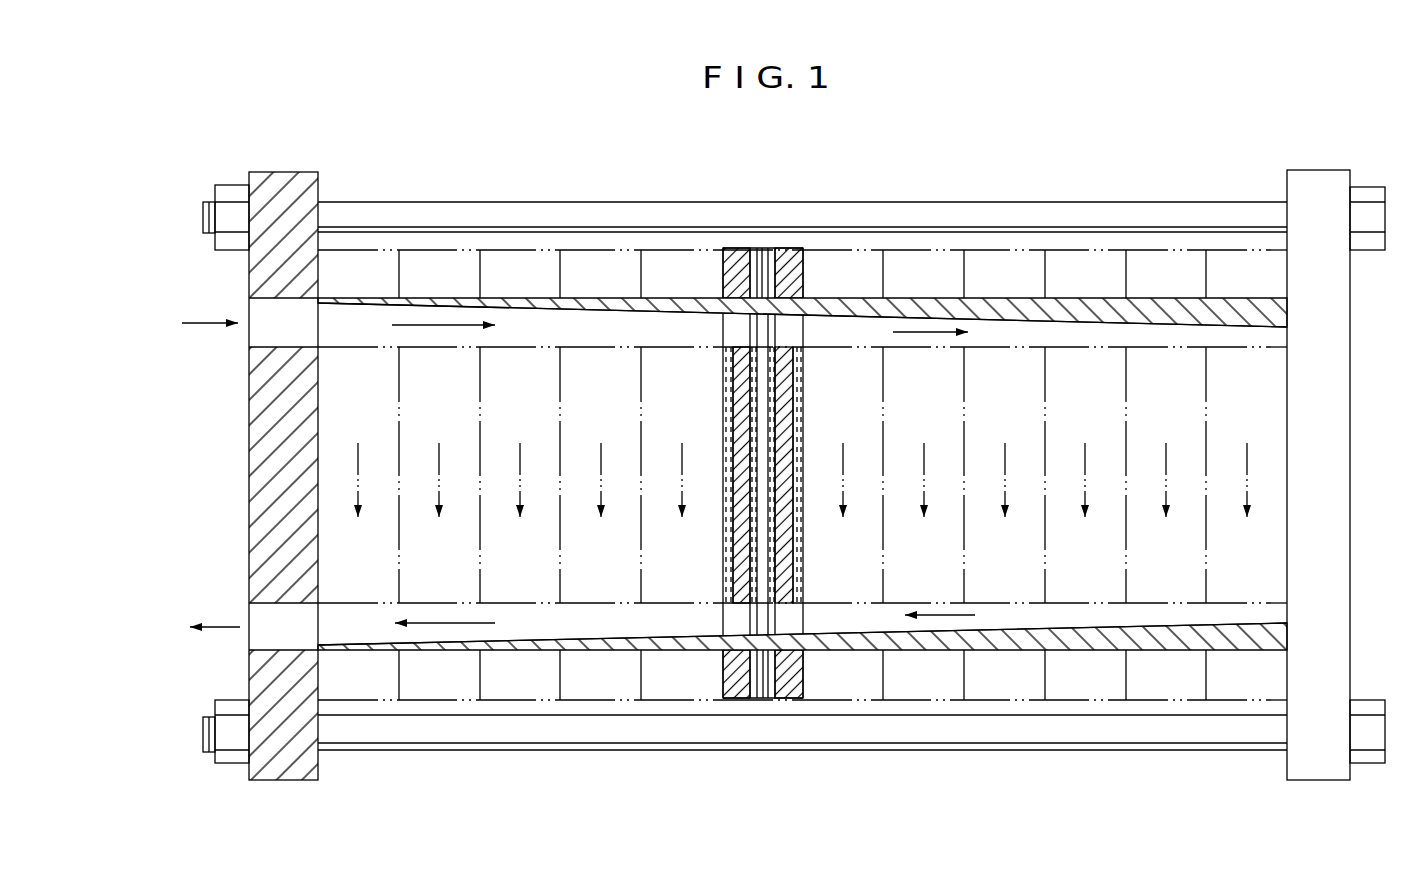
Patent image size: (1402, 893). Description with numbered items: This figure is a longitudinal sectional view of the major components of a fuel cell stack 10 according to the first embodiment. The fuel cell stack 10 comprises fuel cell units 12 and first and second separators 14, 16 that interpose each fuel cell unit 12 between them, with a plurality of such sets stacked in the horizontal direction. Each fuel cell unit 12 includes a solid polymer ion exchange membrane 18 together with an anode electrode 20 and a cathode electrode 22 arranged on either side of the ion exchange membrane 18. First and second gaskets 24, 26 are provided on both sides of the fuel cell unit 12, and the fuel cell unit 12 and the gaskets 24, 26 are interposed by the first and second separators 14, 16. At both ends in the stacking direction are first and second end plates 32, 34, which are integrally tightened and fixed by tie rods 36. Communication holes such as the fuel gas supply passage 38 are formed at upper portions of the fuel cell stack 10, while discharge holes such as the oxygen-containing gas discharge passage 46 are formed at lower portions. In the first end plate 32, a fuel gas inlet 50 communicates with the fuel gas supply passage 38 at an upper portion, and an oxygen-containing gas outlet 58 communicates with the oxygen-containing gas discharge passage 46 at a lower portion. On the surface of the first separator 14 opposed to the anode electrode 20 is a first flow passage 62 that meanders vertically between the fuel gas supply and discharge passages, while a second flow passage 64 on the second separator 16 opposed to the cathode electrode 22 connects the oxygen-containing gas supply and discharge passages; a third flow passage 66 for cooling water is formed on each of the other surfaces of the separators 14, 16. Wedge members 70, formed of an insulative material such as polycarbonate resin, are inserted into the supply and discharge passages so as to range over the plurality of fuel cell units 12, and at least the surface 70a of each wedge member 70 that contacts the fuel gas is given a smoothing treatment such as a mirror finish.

The fuel cell stack 10 is at (1065, 111).
The fuel cell unit 12 is at (763, 250).
The first separator 14 is at (738, 250).
The second separator 16 is at (789, 250).
The solid polymer ion exchange membrane 18 is at (762, 700).
The anode electrode 20 is at (750, 375).
The cathode electrode 22 is at (796, 383).
The first gasket 24 is at (740, 700).
The second gasket 26 is at (783, 700).
The first end plate 32 is at (283, 172).
The second end plate 34 is at (1306, 170).
The tie rod 36 is at (1203, 213).
The fuel gas supply passage 38 is at (526, 312).
The oxygen-containing gas discharge passage 46 is at (527, 640).
The fuel gas inlet 50 is at (268, 347).
The oxygen-containing gas outlet 58 is at (268, 650).
The first flow passage 62 is at (744, 417).
The second flow passage 64 is at (797, 532).
The third flow passage 66 is at (724, 527).
The wedge member 70 is at (1070, 298).
The surface of wedge member 70a is at (1069, 327).